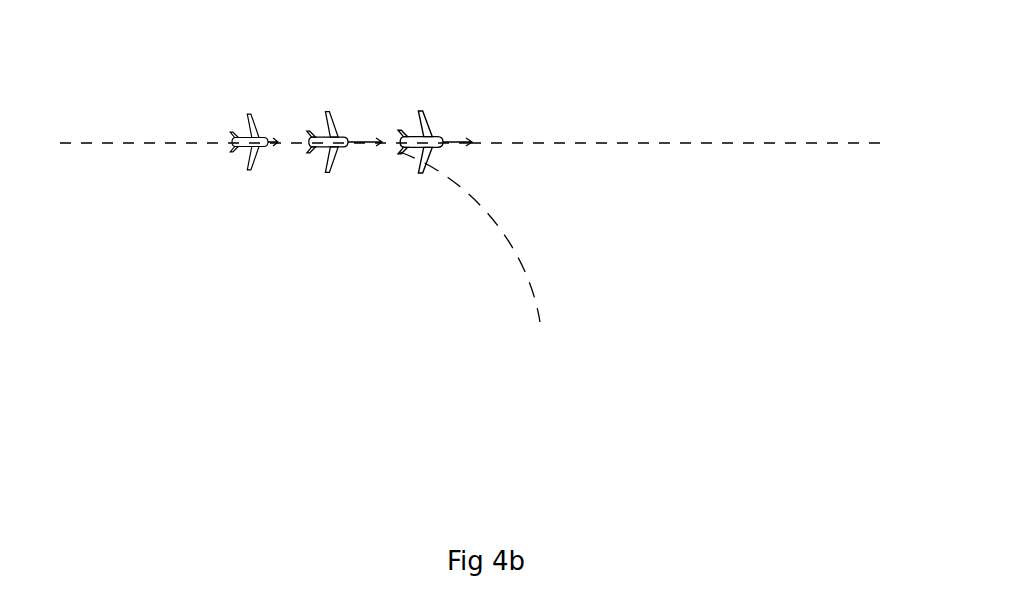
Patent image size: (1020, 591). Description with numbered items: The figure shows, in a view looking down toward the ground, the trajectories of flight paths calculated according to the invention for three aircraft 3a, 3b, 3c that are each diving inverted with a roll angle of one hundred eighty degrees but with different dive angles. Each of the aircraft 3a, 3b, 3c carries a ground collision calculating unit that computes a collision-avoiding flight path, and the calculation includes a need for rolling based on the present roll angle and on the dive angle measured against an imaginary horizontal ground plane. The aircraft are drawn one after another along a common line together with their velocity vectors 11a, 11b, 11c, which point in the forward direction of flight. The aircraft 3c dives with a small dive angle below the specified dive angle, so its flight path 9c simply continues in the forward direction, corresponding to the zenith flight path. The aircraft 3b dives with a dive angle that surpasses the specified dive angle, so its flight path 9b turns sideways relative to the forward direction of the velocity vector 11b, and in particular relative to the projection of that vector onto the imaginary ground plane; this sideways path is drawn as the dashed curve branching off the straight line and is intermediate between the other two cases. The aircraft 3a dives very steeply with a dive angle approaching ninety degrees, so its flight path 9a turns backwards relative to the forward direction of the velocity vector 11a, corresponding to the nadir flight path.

The aircraft 3a is at (238, 138).
The aircraft 3b is at (312, 135).
The aircraft 3c is at (402, 138).
The flight path 9a is at (800, 143).
The flight path 9b is at (528, 270).
The flight path 9c is at (85, 143).
The velocity vector 11a is at (270, 147).
The velocity vector 11b is at (370, 149).
The velocity vector 11c is at (456, 141).